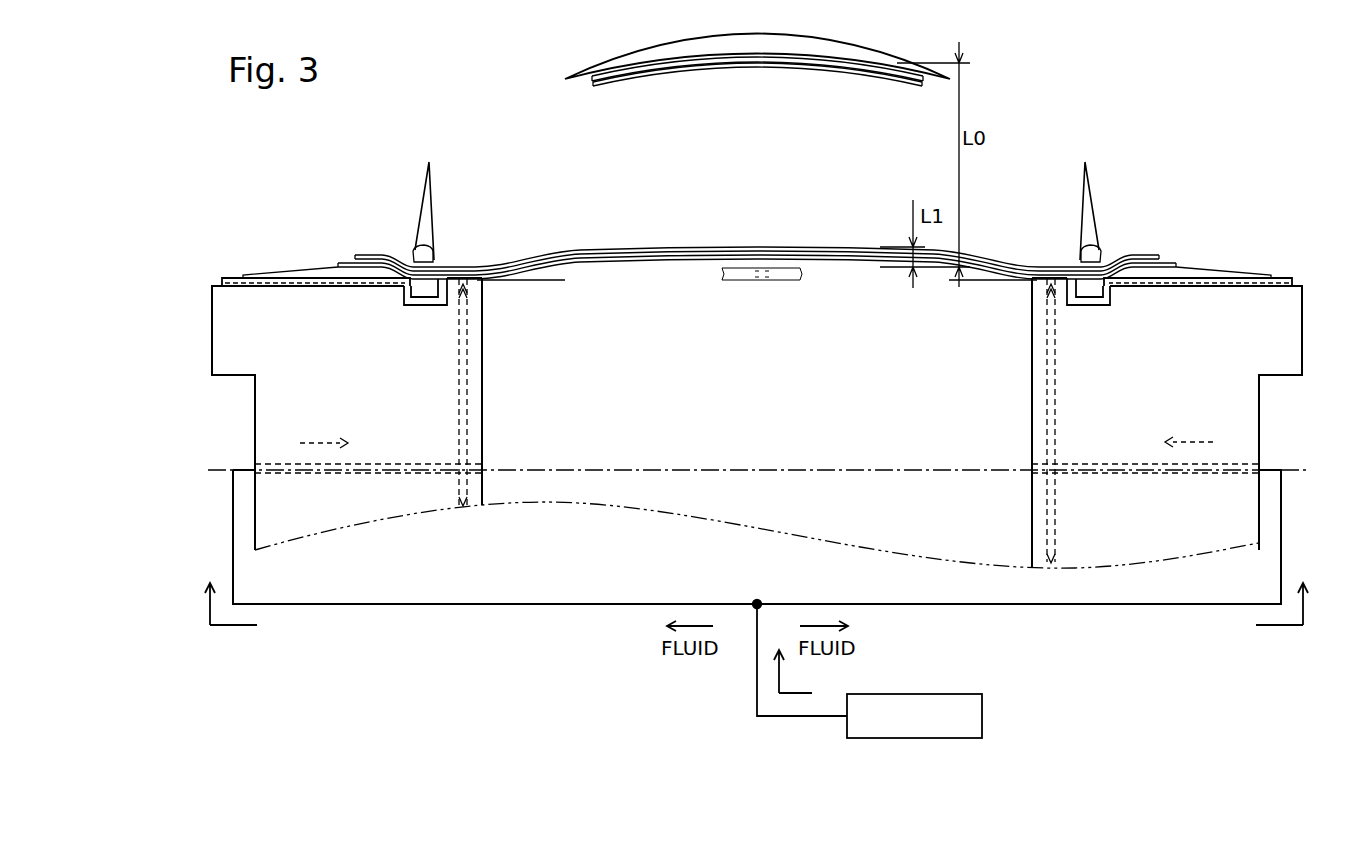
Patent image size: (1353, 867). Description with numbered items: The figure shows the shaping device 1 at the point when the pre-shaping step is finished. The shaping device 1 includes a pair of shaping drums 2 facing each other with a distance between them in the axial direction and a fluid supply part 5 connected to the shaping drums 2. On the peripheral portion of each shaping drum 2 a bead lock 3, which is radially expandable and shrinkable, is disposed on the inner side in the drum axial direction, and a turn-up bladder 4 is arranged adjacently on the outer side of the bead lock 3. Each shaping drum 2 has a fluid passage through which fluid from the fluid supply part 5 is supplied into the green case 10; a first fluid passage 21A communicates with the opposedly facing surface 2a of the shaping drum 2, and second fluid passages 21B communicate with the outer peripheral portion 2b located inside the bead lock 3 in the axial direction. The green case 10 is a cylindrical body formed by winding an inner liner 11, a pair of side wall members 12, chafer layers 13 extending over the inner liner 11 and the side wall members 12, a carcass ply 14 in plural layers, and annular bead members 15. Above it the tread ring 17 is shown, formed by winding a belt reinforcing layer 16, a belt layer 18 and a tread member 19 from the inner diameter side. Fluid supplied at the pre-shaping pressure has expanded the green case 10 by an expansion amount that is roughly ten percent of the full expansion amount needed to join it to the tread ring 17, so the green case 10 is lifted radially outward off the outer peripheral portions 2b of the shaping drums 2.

The shaping device 1 is at (1011, 171).
The shaping drum 2 is at (331, 394).
The opposedly facing surface 2a is at (483, 448).
The outer peripheral portion 2b is at (471, 270).
The bead lock 3 is at (390, 301).
The turn-up bladder 4 is at (228, 276).
The fluid supply part 5 is at (921, 731).
The green case 10 is at (703, 215).
The inner liner 11 is at (1001, 272).
The side wall member 12 is at (307, 267).
The chafer layer 13 is at (404, 262).
The carcass ply 14 is at (808, 247).
The bead member 15 is at (433, 193).
The belt reinforcing layer 16 is at (593, 84).
The tread ring 17 is at (705, 73).
The belt layer 18 is at (593, 74).
The tread member 19 is at (578, 62).
The first fluid passage 21A is at (397, 478).
The second fluid passage 21B is at (461, 388).